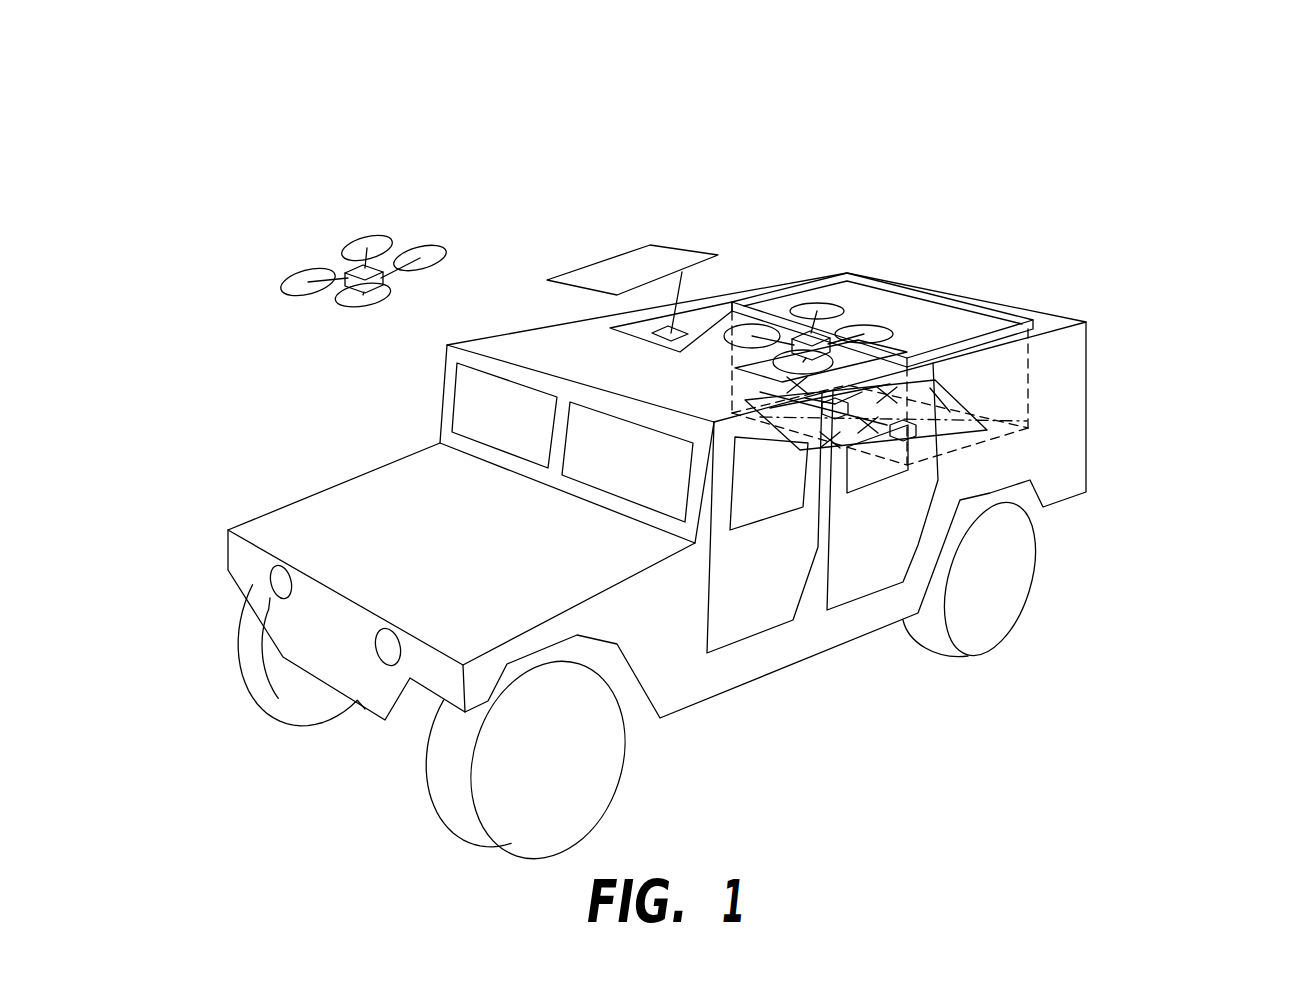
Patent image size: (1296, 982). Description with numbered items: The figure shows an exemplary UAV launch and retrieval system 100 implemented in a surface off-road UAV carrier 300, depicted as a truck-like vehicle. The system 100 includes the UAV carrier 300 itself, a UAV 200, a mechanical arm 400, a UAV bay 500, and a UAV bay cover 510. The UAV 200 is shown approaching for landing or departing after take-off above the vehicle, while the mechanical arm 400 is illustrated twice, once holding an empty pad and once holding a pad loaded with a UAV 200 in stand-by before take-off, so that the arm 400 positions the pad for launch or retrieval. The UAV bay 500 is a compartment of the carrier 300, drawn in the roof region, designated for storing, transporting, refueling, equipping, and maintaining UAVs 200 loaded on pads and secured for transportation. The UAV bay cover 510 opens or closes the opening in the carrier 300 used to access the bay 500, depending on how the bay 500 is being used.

The UAV launch and retrieval system 100 is at (1151, 736).
The UAV 200 is at (172, 49).
The UAV carrier 300 is at (1220, 220).
The mechanical arm 400 is at (430, 49).
The UAV bay 500 is at (980, 49).
The UAV bay cover 510 is at (1208, 49).